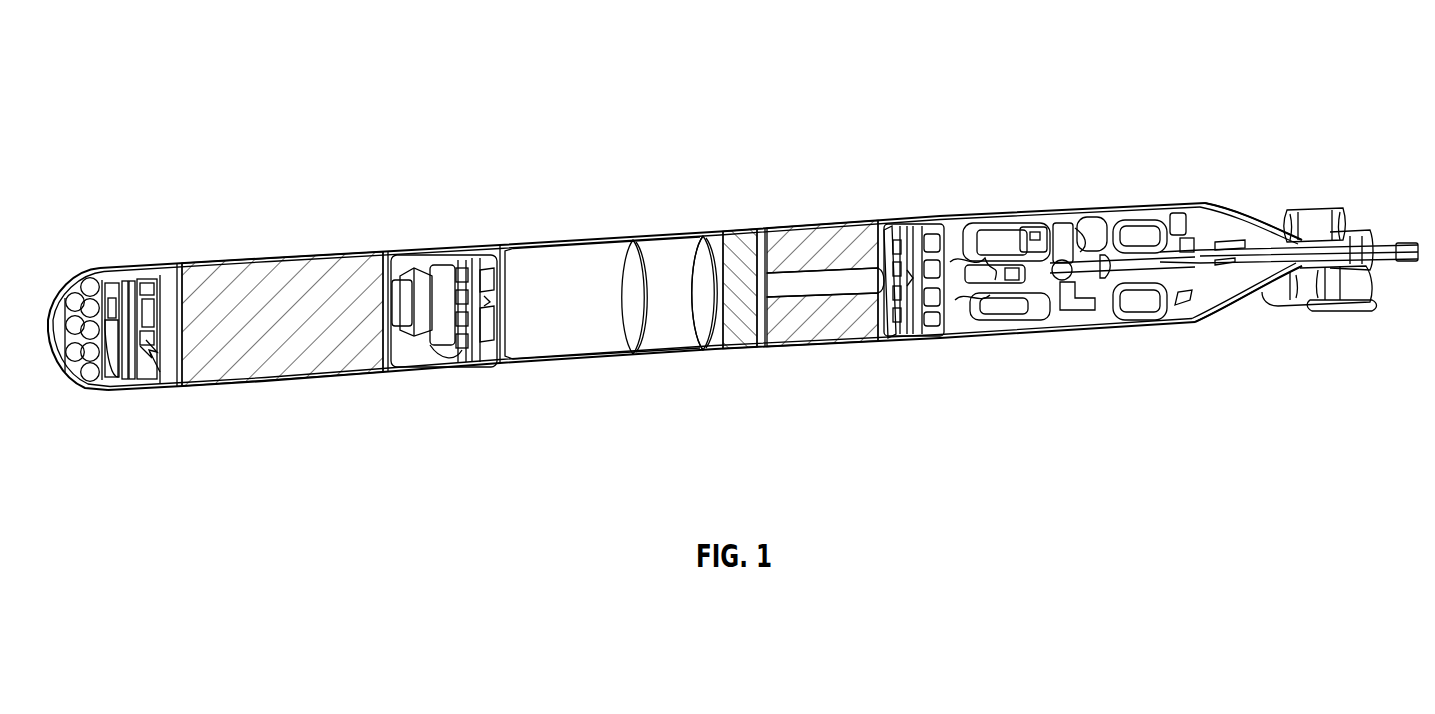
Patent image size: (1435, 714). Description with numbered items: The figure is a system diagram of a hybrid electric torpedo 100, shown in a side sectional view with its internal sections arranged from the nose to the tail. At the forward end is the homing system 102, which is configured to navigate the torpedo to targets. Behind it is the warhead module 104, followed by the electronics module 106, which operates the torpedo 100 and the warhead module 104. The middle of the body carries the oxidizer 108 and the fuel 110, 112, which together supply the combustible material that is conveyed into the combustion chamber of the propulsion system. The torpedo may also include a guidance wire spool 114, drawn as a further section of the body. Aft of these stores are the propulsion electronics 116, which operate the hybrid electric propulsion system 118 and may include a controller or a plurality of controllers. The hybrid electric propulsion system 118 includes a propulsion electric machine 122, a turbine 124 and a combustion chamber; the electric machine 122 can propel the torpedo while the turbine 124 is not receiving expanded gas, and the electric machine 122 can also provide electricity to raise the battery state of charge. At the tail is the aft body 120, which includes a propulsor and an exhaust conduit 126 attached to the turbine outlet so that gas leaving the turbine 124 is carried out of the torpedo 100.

The torpedo 100 is at (1303, 42).
The homing system 102 is at (128, 282).
The warhead module 104 is at (398, 418).
The electronics module 106 is at (447, 207).
The oxidizer 108 is at (634, 384).
The fuel 110 is at (751, 380).
The fuel 112 is at (773, 188).
The guidance wire spool 114 is at (873, 188).
The propulsion electronics 116 is at (962, 358).
The hybrid electric propulsion system 118 is at (1042, 168).
The aft body 120 is at (1265, 190).
The propulsion electric machine 122 is at (1218, 344).
The turbine 124 is at (1117, 360).
The exhaust conduit 126 is at (1377, 190).